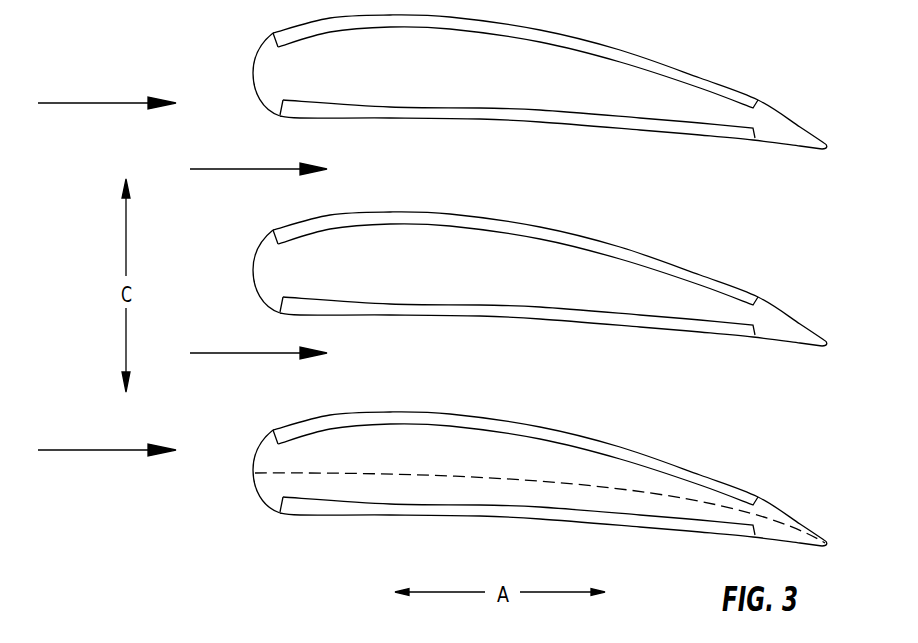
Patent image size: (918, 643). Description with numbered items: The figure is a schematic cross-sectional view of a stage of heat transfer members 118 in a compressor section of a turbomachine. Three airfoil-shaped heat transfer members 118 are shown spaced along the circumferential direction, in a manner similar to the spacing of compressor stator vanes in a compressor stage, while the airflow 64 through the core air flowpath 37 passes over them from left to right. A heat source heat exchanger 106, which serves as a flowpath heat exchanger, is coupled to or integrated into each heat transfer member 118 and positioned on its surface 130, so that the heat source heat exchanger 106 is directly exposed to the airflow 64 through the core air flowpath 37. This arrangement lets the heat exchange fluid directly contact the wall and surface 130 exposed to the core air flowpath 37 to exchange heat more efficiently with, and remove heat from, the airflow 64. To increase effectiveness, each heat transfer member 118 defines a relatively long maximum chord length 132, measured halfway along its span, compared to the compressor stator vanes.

The core air flowpath 37 is at (603, 195).
The heat transfer member 118 is at (777, 127).
The surface 130 is at (438, 412).
The heat source heat exchanger 106 is at (523, 428).
The maximum chord length 132 is at (623, 487).
The airflow 64 is at (270, 355).